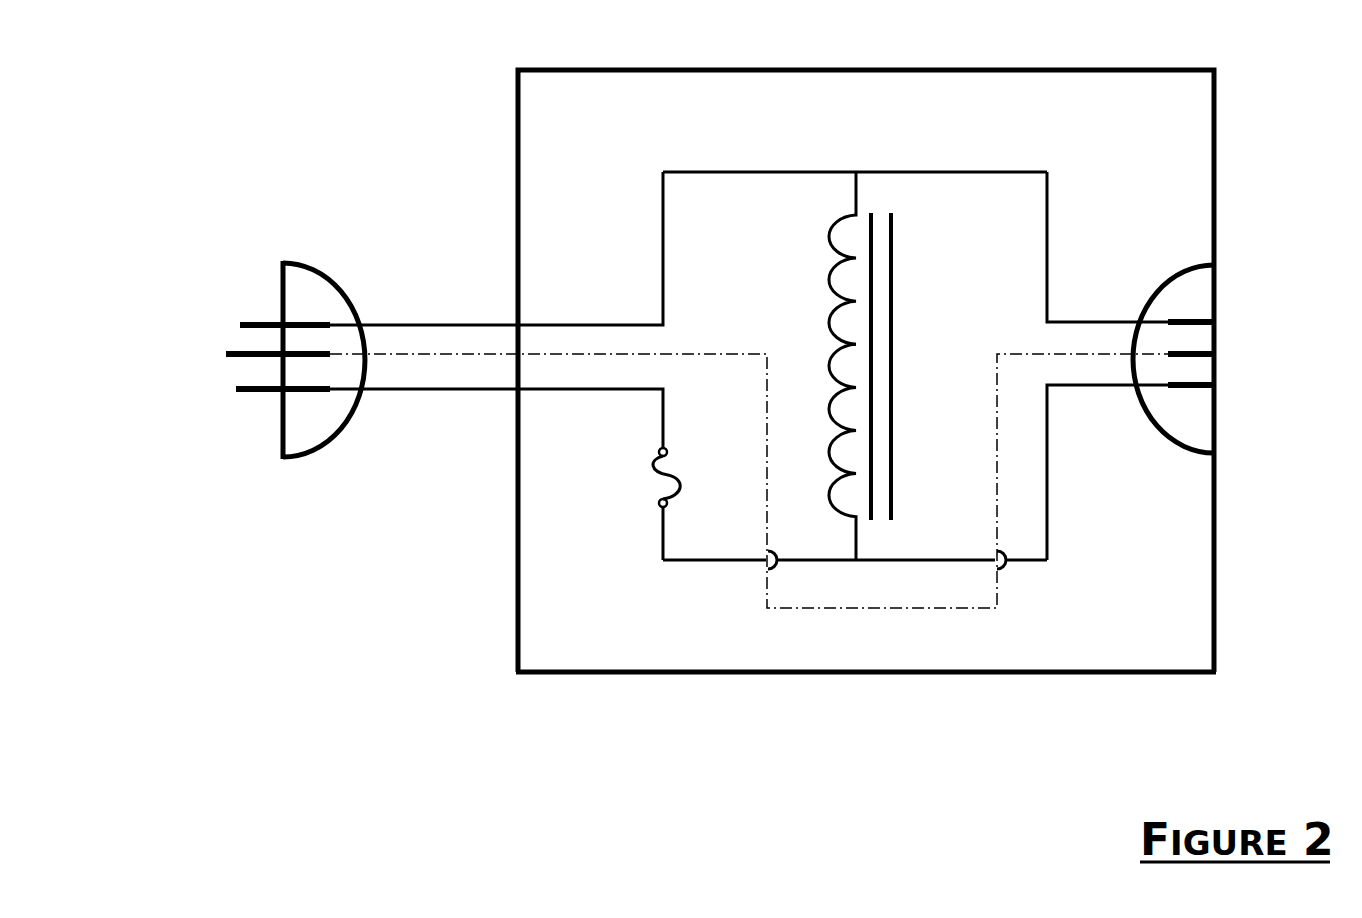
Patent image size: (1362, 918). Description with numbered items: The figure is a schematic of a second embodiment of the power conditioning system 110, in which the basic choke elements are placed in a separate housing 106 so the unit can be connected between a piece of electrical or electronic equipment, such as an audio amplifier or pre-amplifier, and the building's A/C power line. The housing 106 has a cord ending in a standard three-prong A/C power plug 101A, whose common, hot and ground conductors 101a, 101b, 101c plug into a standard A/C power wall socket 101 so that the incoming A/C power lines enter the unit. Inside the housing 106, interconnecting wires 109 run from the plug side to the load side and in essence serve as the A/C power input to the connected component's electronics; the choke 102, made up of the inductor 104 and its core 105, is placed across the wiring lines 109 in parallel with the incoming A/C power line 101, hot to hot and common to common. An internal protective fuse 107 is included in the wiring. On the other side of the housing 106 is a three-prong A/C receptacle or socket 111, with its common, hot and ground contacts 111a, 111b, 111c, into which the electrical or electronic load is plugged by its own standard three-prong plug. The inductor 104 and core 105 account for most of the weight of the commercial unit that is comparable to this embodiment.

The A/C power wall socket 101 is at (299, 360).
The A/C power plug 101A is at (432, 300).
The input line conductor 101a is at (248, 325).
The input ground conductor 101b is at (248, 354).
The input neutral conductor 101c is at (248, 383).
The choke 102 is at (828, 268).
The inductor 104 is at (834, 452).
The inductor core 105 is at (962, 268).
The housing 106 is at (1282, 657).
The protective fuse 107 is at (648, 498).
The interconnecting wires 109 is at (964, 162).
The system 110 is at (874, 61).
The socket 111 is at (1212, 352).
The output line conductor 111a is at (1229, 322).
The output ground conductor 111b is at (1229, 350).
The output neutral conductor 111c is at (1228, 379).